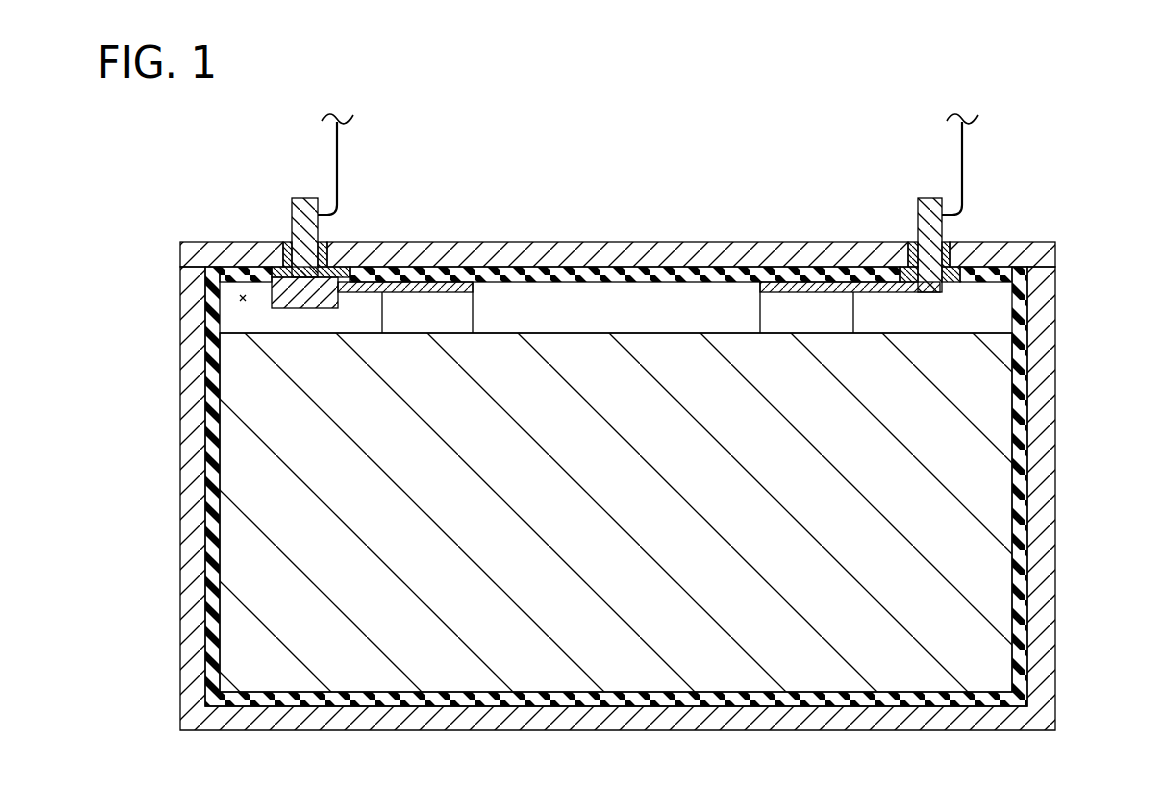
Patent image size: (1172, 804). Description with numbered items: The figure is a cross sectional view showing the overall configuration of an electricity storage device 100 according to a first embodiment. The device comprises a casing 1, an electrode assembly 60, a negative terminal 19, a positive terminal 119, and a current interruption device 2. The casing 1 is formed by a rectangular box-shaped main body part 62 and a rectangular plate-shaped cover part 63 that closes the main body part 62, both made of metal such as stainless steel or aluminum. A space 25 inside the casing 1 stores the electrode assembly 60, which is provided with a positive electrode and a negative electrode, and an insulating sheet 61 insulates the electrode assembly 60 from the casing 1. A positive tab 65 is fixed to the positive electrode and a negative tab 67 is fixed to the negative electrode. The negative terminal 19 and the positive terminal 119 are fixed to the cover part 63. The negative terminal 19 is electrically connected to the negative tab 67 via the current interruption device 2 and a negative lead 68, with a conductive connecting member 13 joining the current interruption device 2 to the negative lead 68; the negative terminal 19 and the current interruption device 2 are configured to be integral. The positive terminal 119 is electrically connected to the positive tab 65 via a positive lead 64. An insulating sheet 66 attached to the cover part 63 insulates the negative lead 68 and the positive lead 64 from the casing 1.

The electricity storage device 100 is at (674, 422).
The casing 1 is at (674, 486).
The cover part 63 is at (1044, 251).
The main body part 62 is at (654, 498).
The insulating sheet 61 is at (1020, 555).
The insulating sheet 66 is at (648, 273).
The electrode assembly 60 is at (973, 590).
The current interruption device 2 is at (282, 295).
The space 25 is at (243, 296).
The conductive connecting member 13 is at (347, 273).
The negative terminal 19 is at (306, 207).
The negative lead 68 is at (429, 288).
The negative tab 67 is at (470, 312).
The positive tab 65 is at (766, 310).
The positive lead 64 is at (800, 288).
The positive terminal 119 is at (927, 207).